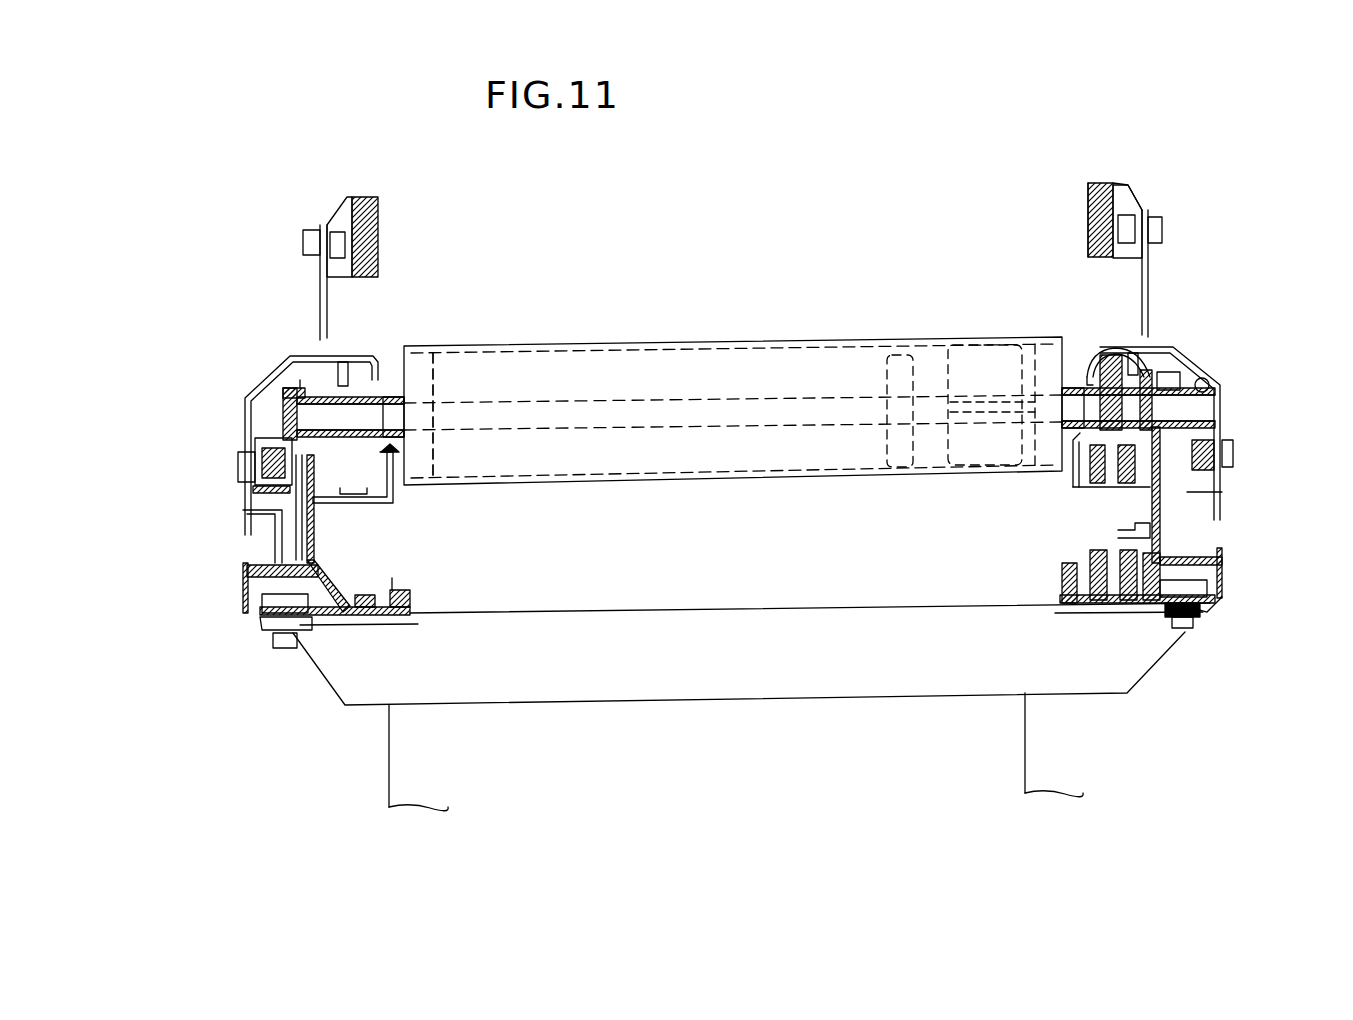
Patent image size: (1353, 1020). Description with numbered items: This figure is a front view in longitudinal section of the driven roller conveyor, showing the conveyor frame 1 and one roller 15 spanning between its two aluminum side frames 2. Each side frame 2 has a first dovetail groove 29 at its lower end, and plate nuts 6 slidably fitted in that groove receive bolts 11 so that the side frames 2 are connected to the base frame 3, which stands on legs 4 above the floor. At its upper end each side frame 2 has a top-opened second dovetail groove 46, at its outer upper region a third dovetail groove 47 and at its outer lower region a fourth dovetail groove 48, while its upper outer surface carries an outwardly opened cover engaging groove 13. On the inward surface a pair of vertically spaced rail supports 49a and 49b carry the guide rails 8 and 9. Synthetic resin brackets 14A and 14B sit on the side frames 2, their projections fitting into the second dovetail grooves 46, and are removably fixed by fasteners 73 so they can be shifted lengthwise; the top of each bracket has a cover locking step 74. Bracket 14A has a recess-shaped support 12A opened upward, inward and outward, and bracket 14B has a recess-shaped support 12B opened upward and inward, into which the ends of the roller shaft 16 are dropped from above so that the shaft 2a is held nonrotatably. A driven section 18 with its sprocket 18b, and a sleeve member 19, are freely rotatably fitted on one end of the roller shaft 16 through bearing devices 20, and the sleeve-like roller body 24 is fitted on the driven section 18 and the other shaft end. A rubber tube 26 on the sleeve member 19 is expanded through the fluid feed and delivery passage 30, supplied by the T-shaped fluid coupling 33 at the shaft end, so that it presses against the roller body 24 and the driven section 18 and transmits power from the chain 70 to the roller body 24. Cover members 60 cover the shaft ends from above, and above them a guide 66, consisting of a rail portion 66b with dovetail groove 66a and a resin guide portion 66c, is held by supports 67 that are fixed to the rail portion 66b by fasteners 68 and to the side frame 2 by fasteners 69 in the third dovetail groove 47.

The conveyor frame 1 is at (262, 630).
The side frame 2 is at (243, 583).
The shaft 2a is at (262, 428).
The base frame 3 is at (526, 683).
The leg 4 is at (410, 787).
The plate nut 6 is at (306, 630).
The guide rail 8 is at (1107, 490).
The guide rail 9 is at (1112, 603).
The bolt 11 is at (288, 650).
The recess-shaped support 12A is at (1165, 373).
The recess-shaped support 12B is at (295, 388).
The cover engaging groove 13 is at (255, 445).
The bracket 14A is at (1180, 365).
The bracket 14B is at (283, 412).
The roller 15 is at (697, 337).
The roller shaft 16 is at (683, 428).
The driven section 18 is at (1087, 378).
The sprocket 18b is at (1098, 365).
The sleeve member 19 is at (888, 440).
The bearing device 20 is at (435, 372).
The roller body 24 is at (570, 462).
The rubber tube 26 is at (962, 445).
The first dovetail groove 29 is at (258, 592).
The fluid feed and delivery passage 30 is at (1003, 412).
The fluid coupling 33 is at (1212, 385).
The second dovetail groove 46 is at (312, 560).
The third dovetail groove 47 is at (250, 490).
The fourth dovetail groove 48 is at (250, 548).
The rail support 49a is at (1085, 480).
The rail support 49b is at (1090, 603).
The cover member 60 is at (264, 372).
The guide 66 is at (374, 197).
The dovetail groove 66a is at (1130, 205).
The rail portion 66b is at (1118, 196).
The guide portion 66c is at (1090, 205).
The support 67 is at (320, 285).
The fastener 68 is at (305, 238).
The fastener 69 is at (240, 468).
The chain 70 is at (1140, 500).
The fastener 73 is at (327, 450).
The cover locking step 74 is at (322, 380).